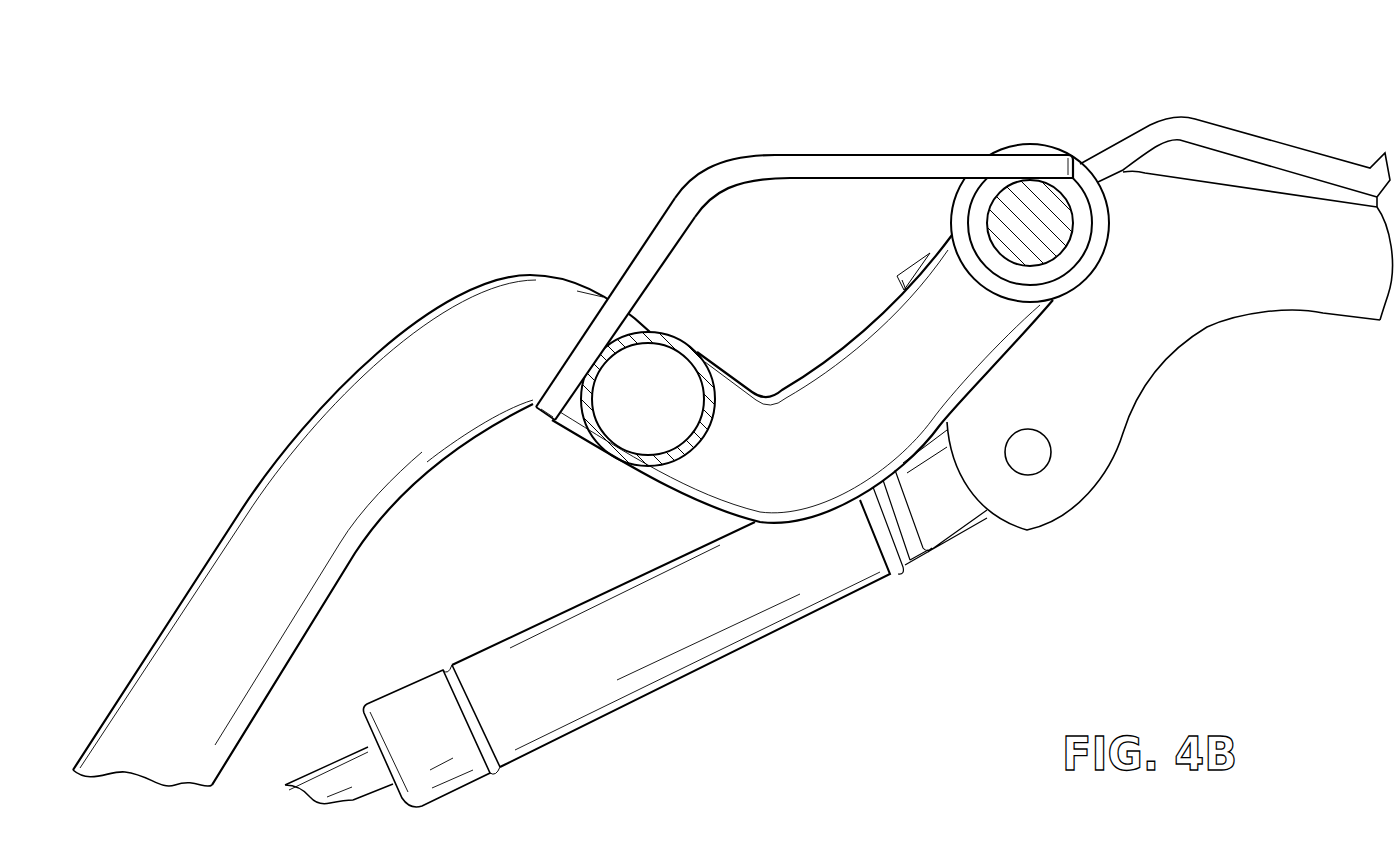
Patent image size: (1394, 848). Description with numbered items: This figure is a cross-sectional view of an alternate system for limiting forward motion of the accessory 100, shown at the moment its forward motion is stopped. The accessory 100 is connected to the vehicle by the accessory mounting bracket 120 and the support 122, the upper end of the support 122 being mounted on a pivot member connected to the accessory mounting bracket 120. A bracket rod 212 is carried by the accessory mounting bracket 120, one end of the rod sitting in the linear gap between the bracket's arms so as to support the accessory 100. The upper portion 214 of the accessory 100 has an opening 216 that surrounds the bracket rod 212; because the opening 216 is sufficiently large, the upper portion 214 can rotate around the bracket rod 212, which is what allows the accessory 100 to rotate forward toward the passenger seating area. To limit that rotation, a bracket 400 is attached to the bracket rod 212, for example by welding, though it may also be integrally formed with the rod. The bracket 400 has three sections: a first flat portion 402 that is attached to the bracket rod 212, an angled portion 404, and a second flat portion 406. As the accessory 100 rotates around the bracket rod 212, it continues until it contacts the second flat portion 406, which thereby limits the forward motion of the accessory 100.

The accessory 100 is at (362, 352).
The accessory mounting bracket 120 is at (1101, 140).
The support 122 is at (470, 648).
The bracket rod 212 is at (1012, 232).
The upper portion 214 is at (1010, 147).
The opening 216 is at (982, 205).
The bracket 400 is at (804, 229).
The first flat portion 402 is at (815, 155).
The angled portion 404 is at (707, 162).
The second flat portion 406 is at (630, 263).